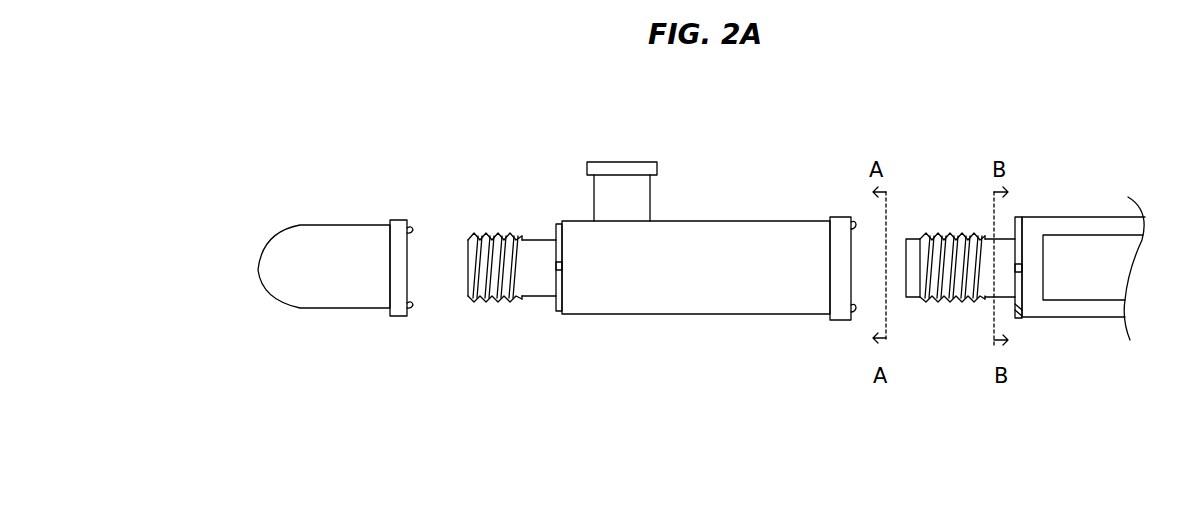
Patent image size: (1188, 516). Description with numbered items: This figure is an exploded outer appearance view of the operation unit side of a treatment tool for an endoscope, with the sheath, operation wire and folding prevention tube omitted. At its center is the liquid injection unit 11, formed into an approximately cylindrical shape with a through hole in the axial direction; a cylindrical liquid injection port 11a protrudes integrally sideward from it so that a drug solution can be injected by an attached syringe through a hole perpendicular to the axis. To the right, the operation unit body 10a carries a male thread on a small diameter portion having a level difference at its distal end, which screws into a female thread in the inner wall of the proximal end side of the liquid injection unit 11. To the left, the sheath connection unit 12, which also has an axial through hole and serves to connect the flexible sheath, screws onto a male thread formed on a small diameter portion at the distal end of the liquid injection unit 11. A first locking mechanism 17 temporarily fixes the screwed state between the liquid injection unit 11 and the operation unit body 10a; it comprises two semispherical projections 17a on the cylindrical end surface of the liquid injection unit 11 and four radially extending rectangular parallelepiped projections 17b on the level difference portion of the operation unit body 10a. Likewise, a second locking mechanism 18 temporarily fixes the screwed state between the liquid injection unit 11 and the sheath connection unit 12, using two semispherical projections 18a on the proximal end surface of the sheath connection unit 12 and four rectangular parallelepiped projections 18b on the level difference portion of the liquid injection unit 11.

The operation unit body 10a is at (1075, 310).
The liquid injection unit 11 is at (735, 236).
The liquid injection port 11a is at (640, 160).
The sheath connection unit 12 is at (313, 300).
The first locking mechanism 17 is at (1042, 440).
The semispherical projections 17a is at (848, 224).
The rectangular parallelepiped projections 17b is at (1020, 268).
The second locking mechanism 18 is at (575, 405).
The semispherical projections 18a is at (414, 228).
The rectangular parallelepiped projections 18b is at (560, 268).